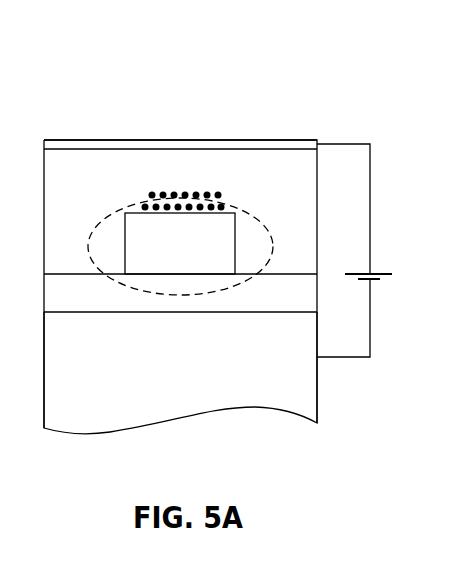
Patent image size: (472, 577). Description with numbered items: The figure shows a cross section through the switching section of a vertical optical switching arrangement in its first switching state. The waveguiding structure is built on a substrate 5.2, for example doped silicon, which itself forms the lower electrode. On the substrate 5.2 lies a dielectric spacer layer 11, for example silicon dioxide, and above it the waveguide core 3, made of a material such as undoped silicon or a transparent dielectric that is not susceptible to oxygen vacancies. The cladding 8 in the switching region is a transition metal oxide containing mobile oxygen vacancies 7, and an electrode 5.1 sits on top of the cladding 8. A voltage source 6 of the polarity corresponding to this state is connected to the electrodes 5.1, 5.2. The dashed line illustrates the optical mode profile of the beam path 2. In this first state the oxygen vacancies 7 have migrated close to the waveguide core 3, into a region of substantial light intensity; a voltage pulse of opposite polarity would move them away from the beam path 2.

The electrode 5.1 is at (145, 138).
The waveguide core 3 is at (138, 228).
The oxygen vacancies 7 is at (207, 193).
The beam path 2 is at (256, 213).
The cladding 8 is at (300, 178).
The voltage source 6 is at (372, 281).
The dielectric spacer layer 11 is at (63, 293).
The substrate electrode 5.2 is at (202, 392).